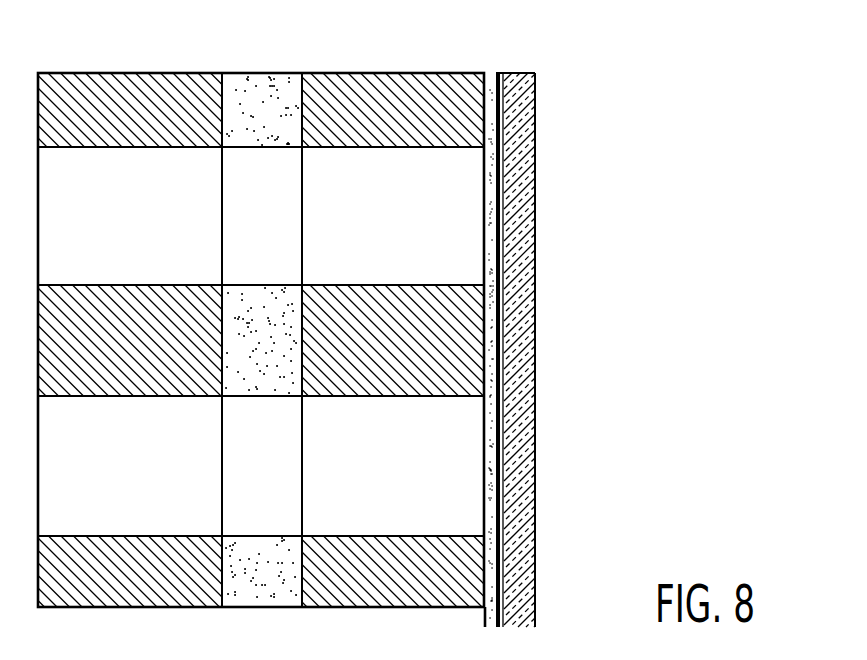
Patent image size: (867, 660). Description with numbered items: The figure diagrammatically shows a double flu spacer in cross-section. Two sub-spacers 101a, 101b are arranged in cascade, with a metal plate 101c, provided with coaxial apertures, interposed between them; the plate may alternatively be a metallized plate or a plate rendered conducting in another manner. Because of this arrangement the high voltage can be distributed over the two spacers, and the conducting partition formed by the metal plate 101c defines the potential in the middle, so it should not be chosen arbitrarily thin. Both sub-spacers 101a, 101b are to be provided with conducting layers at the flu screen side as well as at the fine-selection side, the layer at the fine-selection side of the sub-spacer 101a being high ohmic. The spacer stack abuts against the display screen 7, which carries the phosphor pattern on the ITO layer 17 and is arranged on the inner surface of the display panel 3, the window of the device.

The sub-spacer 101a is at (108, 96).
The sub-spacer 101b is at (377, 94).
The metal plate 101c is at (262, 93).
The display screen 7 is at (492, 88).
The ITO layer 17 is at (505, 577).
The display panel 3 is at (535, 281).